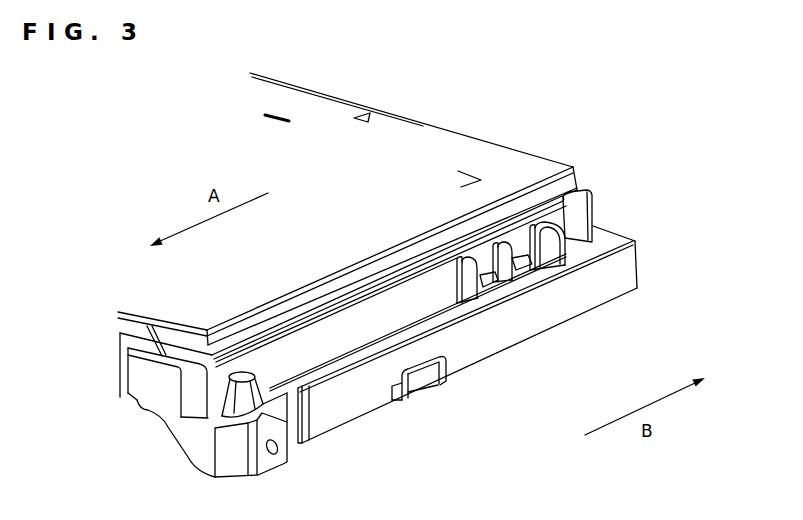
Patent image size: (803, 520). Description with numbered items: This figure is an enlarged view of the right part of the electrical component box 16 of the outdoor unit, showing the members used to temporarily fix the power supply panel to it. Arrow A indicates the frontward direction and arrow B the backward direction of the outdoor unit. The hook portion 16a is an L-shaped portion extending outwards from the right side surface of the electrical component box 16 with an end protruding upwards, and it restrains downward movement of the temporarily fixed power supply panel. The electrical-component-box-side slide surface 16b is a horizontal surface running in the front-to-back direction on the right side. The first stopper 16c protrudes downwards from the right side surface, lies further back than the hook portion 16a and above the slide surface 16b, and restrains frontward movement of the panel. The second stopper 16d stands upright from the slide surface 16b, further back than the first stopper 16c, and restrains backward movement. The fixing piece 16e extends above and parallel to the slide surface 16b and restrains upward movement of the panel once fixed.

The electrical component box 16 is at (590, 148).
The hook portion 16a is at (423, 368).
The electrical-component-box-side slide surface 16b is at (330, 368).
The first stopper 16c is at (492, 285).
The second stopper 16d is at (550, 255).
The fixing piece 16e is at (508, 250).